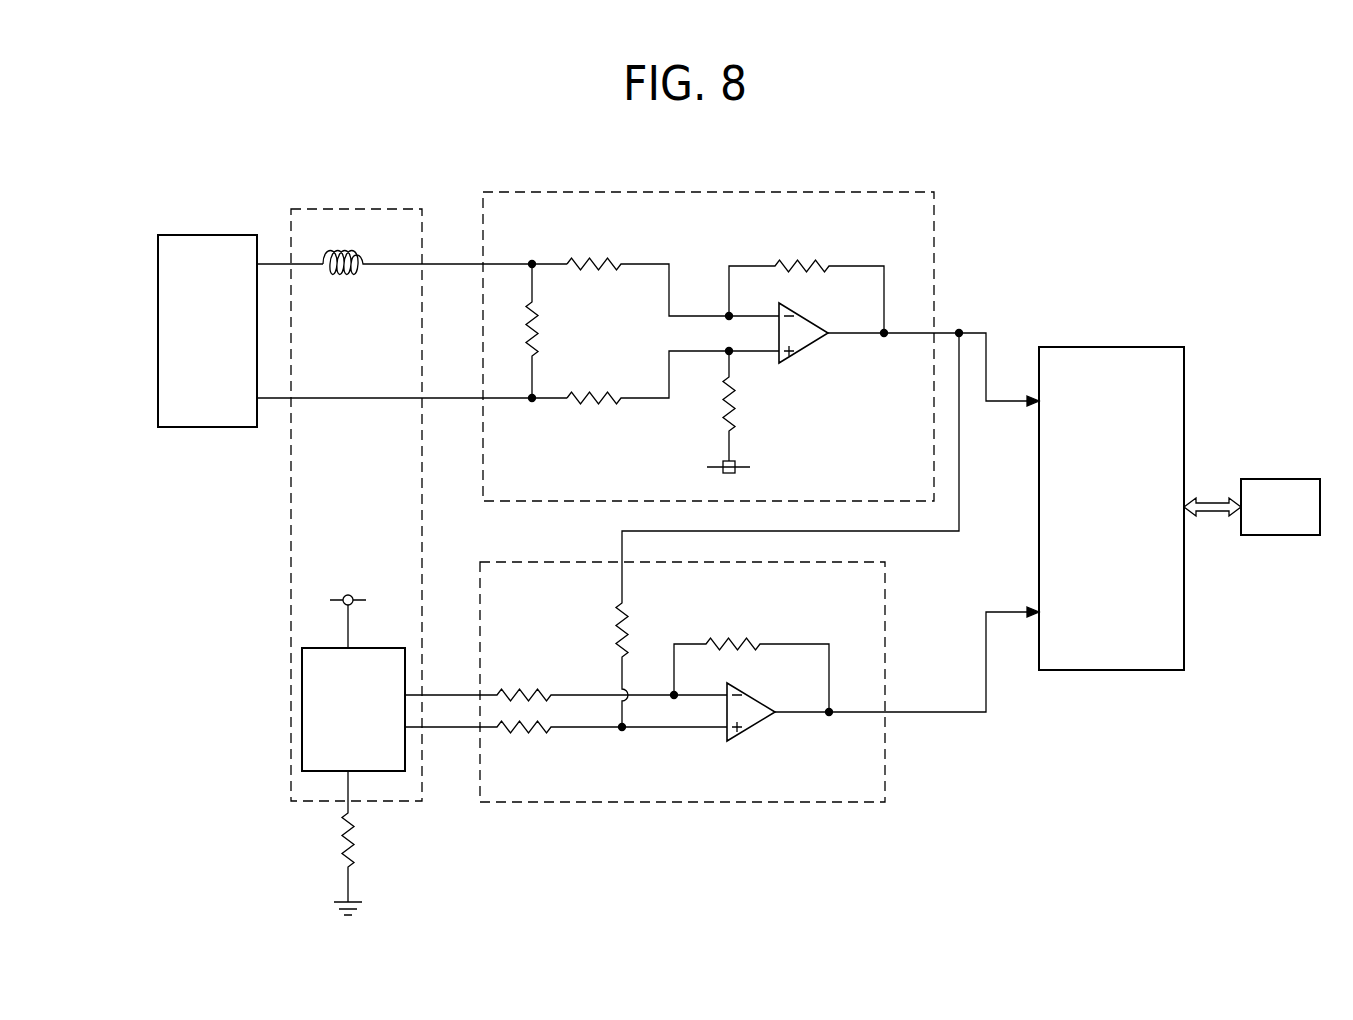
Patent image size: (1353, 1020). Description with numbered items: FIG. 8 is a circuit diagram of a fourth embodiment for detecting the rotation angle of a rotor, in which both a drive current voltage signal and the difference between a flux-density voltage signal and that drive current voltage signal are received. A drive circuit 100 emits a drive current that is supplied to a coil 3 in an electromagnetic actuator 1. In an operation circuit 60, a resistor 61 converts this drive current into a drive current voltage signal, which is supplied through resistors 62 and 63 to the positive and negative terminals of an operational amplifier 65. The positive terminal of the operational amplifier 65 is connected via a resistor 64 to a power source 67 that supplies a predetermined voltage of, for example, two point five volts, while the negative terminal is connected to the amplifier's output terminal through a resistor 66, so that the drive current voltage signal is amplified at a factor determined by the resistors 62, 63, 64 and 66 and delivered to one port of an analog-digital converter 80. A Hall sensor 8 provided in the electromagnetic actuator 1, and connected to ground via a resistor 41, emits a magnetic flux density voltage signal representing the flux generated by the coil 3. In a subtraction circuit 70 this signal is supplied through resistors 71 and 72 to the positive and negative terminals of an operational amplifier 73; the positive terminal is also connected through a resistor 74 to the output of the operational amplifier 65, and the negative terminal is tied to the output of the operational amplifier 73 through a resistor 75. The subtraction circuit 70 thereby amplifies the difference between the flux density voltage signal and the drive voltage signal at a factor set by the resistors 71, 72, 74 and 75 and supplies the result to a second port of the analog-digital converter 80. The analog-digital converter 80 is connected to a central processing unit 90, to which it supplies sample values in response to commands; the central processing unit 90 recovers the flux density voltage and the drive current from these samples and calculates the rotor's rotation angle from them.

The electromagnetic actuator 1 is at (356, 209).
The coil 3 is at (360, 278).
The Hall sensor 8 is at (392, 645).
The resistor 41 is at (360, 837).
The operation circuit 60 is at (935, 241).
The resistor 61 is at (537, 331).
The resistor 62 is at (586, 262).
The resistor 63 is at (599, 408).
The resistor 64 is at (737, 411).
The operational amplifier 65 is at (805, 350).
The resistor 66 is at (793, 262).
The power source 67 is at (742, 466).
The subtraction circuit 70 is at (887, 596).
The resistor 71 is at (524, 690).
The resistor 72 is at (522, 737).
The operational amplifier 73 is at (752, 733).
The resistor 74 is at (630, 623).
The resistor 75 is at (744, 642).
The analog-digital converter 80 is at (1141, 346).
The central processing unit 90 is at (1297, 478).
The drive circuit 100 is at (233, 235).